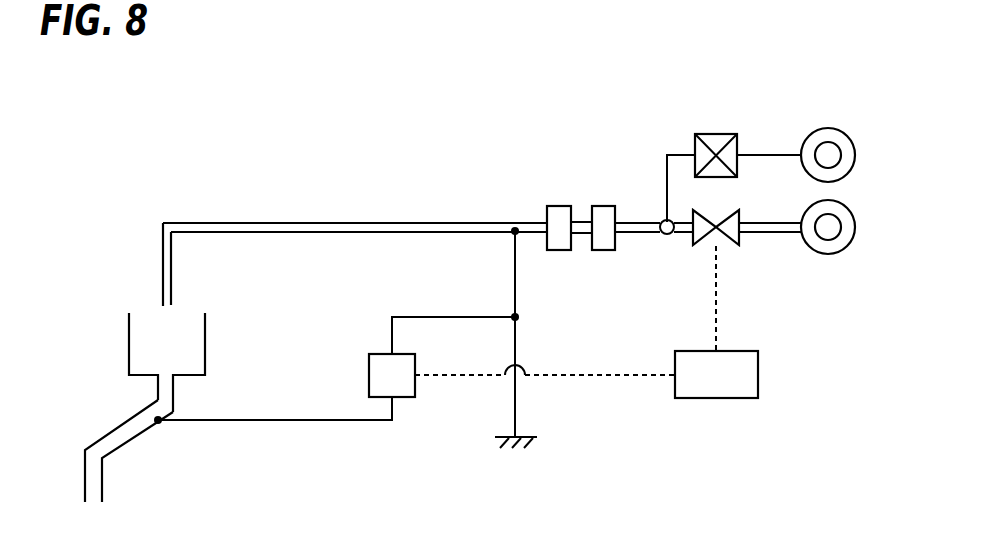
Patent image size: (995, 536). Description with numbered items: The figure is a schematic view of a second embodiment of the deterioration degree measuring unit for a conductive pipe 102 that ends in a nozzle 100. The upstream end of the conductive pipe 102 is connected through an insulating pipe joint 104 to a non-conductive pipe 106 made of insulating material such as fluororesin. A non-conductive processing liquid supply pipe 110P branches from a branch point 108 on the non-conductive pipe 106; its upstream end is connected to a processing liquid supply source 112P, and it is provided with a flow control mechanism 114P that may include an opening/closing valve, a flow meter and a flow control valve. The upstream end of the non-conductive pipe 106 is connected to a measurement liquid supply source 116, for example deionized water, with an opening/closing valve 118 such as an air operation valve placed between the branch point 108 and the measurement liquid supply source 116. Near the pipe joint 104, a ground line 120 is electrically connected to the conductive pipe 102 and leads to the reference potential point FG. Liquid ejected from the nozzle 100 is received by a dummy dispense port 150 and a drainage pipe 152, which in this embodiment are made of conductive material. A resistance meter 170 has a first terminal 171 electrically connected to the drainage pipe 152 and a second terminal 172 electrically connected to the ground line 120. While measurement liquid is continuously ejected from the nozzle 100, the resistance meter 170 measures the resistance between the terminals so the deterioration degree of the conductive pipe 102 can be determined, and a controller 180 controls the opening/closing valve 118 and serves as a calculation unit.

The nozzle 100 is at (160, 307).
The conductive pipe 102 is at (347, 222).
The pipe joint 104 is at (582, 220).
The non-conductive pipe 106 is at (638, 225).
The branch point 108 is at (667, 234).
The processing liquid supply pipe 110P is at (777, 153).
The processing liquid supply source 112P is at (827, 127).
The flow control mechanism 114P is at (718, 133).
The measurement liquid supply source 116 is at (827, 255).
The opening/closing valve 118 is at (738, 242).
The ground line 120 is at (517, 277).
The dummy dispense port 150 is at (207, 325).
The drainage pipe 152 is at (123, 423).
The resistance meter 170 is at (368, 374).
The first terminal 171 is at (160, 423).
The second terminal 172 is at (513, 315).
The controller 180 is at (760, 377).